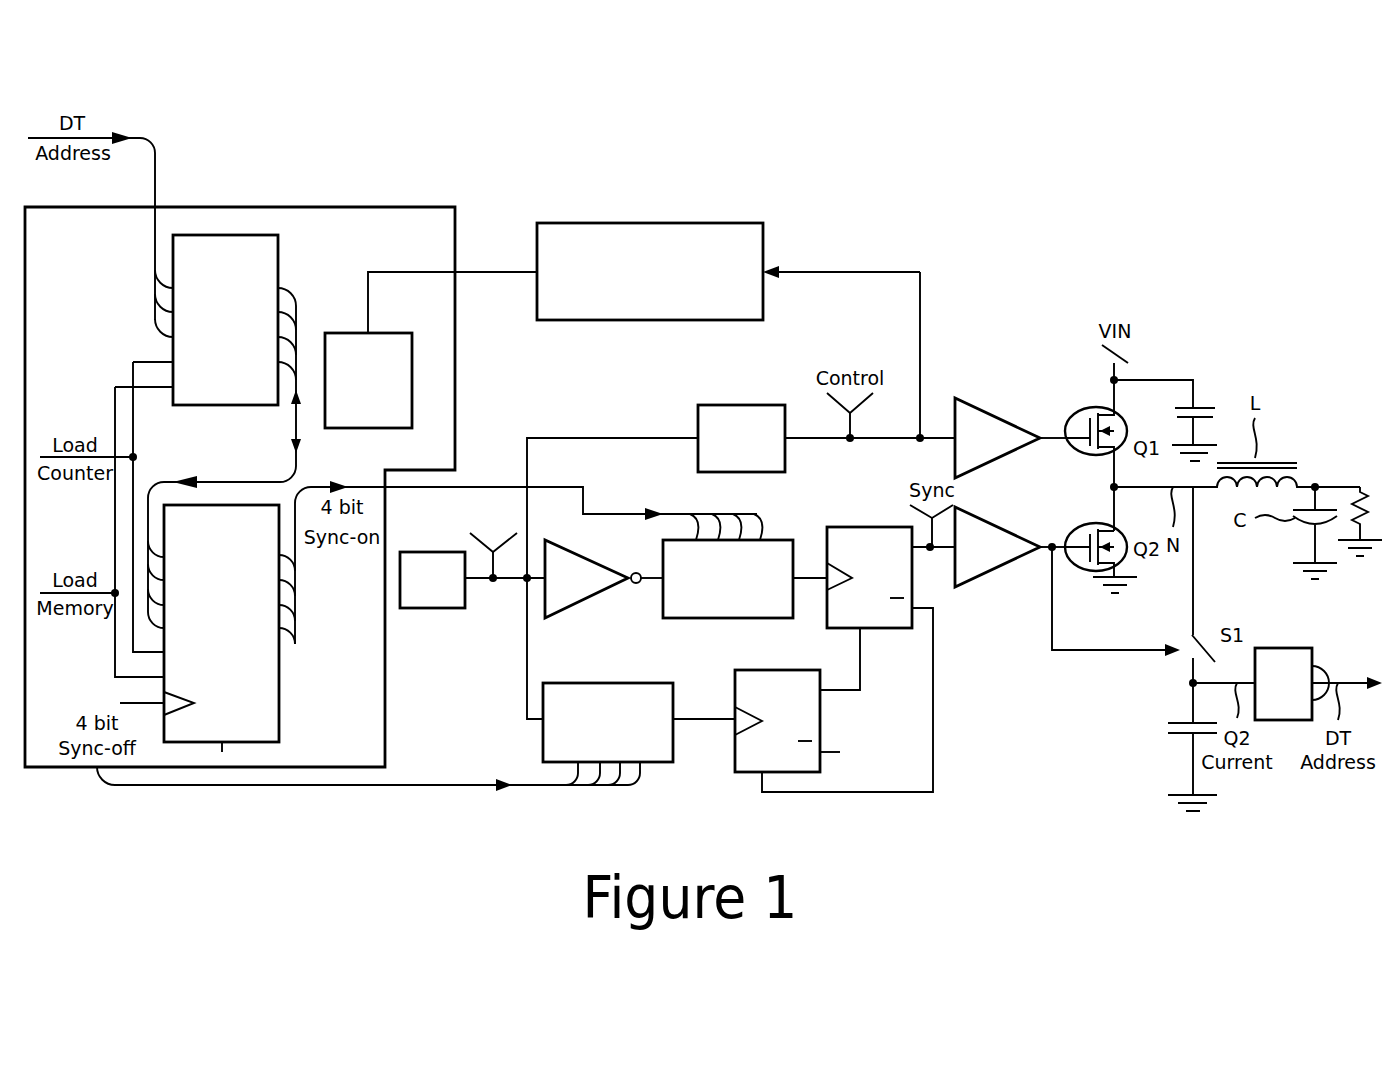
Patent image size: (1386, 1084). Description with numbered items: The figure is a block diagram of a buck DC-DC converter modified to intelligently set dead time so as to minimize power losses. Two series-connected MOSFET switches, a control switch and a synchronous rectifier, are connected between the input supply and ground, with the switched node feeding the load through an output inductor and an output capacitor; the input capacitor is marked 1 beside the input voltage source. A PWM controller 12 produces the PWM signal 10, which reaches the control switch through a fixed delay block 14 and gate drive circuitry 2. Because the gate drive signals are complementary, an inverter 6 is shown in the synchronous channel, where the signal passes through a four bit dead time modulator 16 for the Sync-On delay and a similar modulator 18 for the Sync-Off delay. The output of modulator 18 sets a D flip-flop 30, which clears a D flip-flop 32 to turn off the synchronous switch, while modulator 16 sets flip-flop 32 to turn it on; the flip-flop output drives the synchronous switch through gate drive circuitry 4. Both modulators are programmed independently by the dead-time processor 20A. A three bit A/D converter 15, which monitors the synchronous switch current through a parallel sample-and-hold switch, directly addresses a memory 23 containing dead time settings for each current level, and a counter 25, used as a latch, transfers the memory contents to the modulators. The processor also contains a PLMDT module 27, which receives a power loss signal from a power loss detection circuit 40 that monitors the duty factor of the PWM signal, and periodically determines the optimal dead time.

The input capacitor 1 is at (1172, 420).
The gate drive circuitry 2 is at (1010, 416).
The gate drive circuitry 4 is at (1067, 560).
The inverter 6 is at (604, 589).
The PWM signal 10 is at (505, 580).
The PWM controller 12 is at (432, 617).
The fixed delay block 14 is at (741, 562).
The 3 bit A/D converter 15 is at (1318, 653).
The 4 bit dead time modulator 16 is at (744, 560).
The dead time modulator 18 is at (636, 742).
The dead-time processor 20A is at (240, 455).
The memory 23 is at (225, 290).
The counter 25 is at (264, 628).
The PLMDT module 27 is at (431, 350).
The D flip-flop 30 is at (834, 700).
The D flip-flop 32 is at (909, 577).
The power loss detection circuit 40 is at (728, 299).